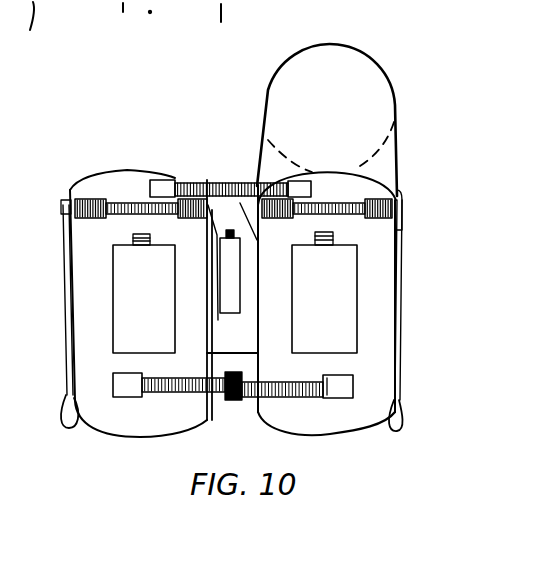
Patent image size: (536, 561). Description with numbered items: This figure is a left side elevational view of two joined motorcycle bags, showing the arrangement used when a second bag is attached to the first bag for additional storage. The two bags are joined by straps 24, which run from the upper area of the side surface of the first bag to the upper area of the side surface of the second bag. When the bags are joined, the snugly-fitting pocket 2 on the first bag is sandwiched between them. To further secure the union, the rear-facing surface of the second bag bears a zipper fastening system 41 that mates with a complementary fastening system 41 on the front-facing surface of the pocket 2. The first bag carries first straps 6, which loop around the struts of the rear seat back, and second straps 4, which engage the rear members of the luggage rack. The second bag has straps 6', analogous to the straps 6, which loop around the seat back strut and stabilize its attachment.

The pocket 2 is at (246, 207).
The second straps 4 is at (392, 424).
The first straps 6 is at (297, 419).
The straps 6' is at (177, 416).
The straps 24 is at (205, 207).
The zipper fastening system 41 is at (208, 208).